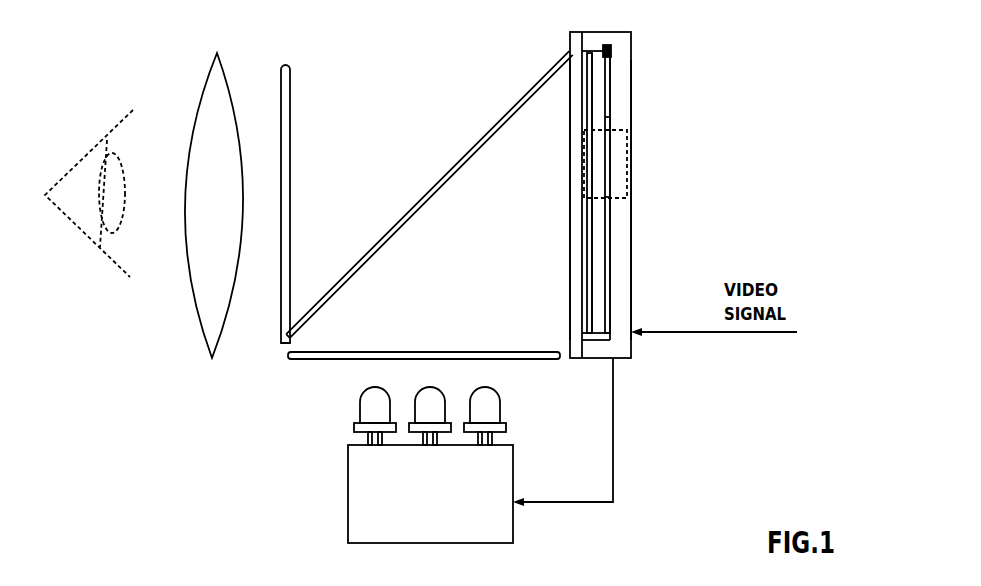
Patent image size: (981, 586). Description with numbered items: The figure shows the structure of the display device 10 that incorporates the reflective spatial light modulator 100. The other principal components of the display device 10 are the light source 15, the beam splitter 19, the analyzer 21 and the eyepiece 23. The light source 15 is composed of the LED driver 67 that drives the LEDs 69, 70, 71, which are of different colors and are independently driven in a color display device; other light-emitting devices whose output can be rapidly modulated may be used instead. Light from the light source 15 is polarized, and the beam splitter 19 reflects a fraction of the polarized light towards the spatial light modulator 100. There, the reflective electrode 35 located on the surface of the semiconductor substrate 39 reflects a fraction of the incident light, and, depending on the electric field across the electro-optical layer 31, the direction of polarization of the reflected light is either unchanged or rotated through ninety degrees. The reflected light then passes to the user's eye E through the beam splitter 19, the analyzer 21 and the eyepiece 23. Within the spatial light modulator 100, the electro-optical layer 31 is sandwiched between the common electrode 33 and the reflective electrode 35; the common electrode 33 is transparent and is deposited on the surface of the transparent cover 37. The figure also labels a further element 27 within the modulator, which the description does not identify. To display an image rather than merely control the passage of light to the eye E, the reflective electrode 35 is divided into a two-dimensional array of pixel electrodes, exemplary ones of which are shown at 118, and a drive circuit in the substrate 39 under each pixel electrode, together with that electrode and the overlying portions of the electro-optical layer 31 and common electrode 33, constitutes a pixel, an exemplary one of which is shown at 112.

The user's eye E is at (93, 240).
The display device 10 is at (417, 289).
The light source 15 is at (343, 546).
The beam splitter 19 is at (518, 102).
The analyzer 21 is at (291, 104).
The eyepiece 23 is at (195, 300).
The light source 27 is at (604, 120).
The electro-optical layer 31 is at (592, 232).
The common electrode 33 is at (587, 183).
The reflective electrode 35 is at (608, 48).
The transparent cover 37 is at (572, 269).
The semiconductor substrate 39 is at (620, 115).
The LED driver 67 is at (348, 494).
The LED 69 is at (360, 410).
The LED 70 is at (432, 389).
The LED 71 is at (486, 389).
The reflective spatial light modulator 100 is at (638, 70).
The pixel 112 is at (629, 157).
The pixel electrodes 118 is at (609, 183).